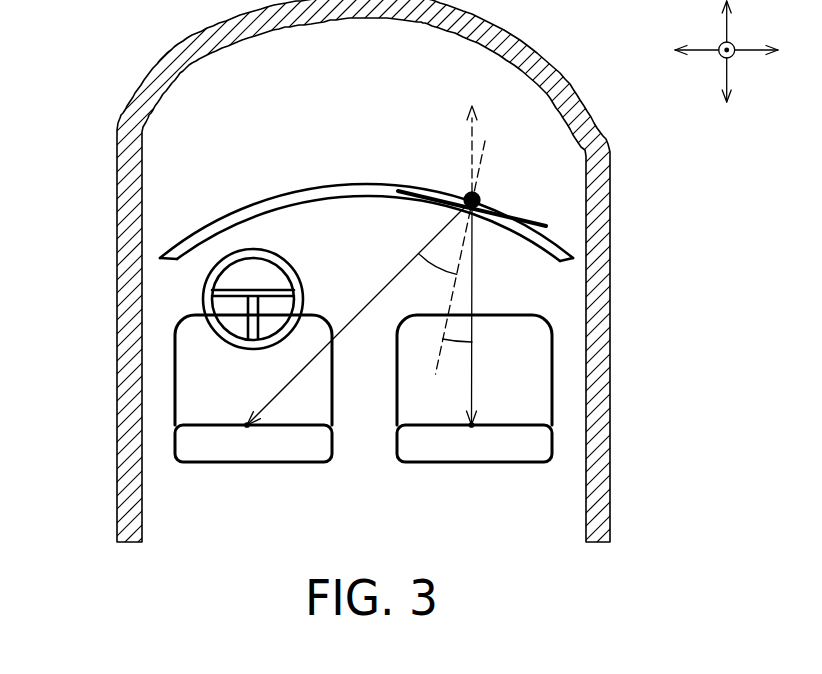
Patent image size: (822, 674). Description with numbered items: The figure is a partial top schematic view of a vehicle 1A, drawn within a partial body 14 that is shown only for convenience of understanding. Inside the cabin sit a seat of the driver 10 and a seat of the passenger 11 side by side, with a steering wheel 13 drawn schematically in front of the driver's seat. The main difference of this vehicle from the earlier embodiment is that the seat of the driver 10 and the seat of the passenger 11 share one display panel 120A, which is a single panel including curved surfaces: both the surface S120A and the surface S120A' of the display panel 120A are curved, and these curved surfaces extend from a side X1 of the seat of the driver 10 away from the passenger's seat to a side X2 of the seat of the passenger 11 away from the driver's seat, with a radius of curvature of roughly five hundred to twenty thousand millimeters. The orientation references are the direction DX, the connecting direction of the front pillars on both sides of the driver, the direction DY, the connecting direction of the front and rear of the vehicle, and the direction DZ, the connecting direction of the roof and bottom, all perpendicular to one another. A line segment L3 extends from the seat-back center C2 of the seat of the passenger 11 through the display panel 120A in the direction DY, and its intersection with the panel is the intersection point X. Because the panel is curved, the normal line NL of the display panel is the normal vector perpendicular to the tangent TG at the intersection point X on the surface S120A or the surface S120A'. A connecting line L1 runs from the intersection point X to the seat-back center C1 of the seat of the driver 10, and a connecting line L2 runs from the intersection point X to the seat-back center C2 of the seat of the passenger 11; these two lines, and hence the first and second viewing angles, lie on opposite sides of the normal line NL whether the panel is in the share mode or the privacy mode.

The vehicle 1A is at (411, 337).
The partial body 14 is at (120, 392).
The display panel 120A is at (431, 218).
The surface of the display panel S120A' is at (431, 221).
The surface of the display panel S120A is at (436, 251).
The steering wheel 13 is at (203, 295).
The seat of the driver 10 is at (251, 472).
The seat of the passenger 11 is at (480, 472).
The side of the seat of the driver X1 is at (198, 439).
The side of the seat of the passenger X2 is at (527, 438).
The seat-back center of the seat of the driver C1 is at (245, 424).
The seat-back center of the seat of the passenger C2 is at (474, 424).
The intersection point X is at (483, 210).
The tangent TG is at (426, 195).
The normal line NL is at (489, 156).
The connecting line L1 is at (379, 293).
The connecting line L2 is at (473, 289).
The line segment L3 is at (473, 132).
The direction DX is at (755, 50).
The direction DY is at (726, 22).
The direction DZ is at (731, 60).